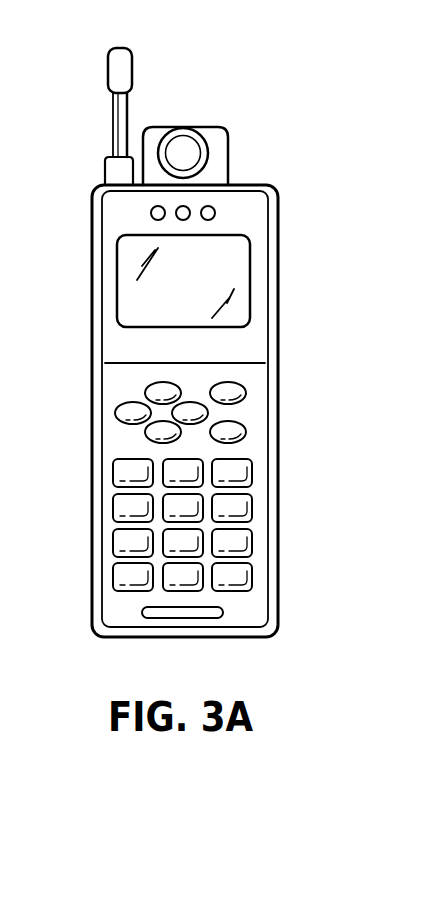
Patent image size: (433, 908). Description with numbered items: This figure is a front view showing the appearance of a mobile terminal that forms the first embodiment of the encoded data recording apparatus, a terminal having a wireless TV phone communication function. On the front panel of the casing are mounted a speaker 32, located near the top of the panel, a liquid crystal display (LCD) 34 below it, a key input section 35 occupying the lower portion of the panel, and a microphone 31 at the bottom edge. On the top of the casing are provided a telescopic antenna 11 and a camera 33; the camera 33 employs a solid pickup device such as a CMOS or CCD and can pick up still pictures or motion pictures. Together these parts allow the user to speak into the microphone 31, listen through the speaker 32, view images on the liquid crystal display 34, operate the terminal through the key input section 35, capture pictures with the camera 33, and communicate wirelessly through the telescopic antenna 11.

The telescopic antenna 11 is at (133, 52).
The microphone 31 is at (125, 608).
The speaker 32 is at (215, 212).
The camera 33 is at (200, 127).
The liquid crystal display 34 is at (240, 274).
The key input section 35 is at (288, 378).